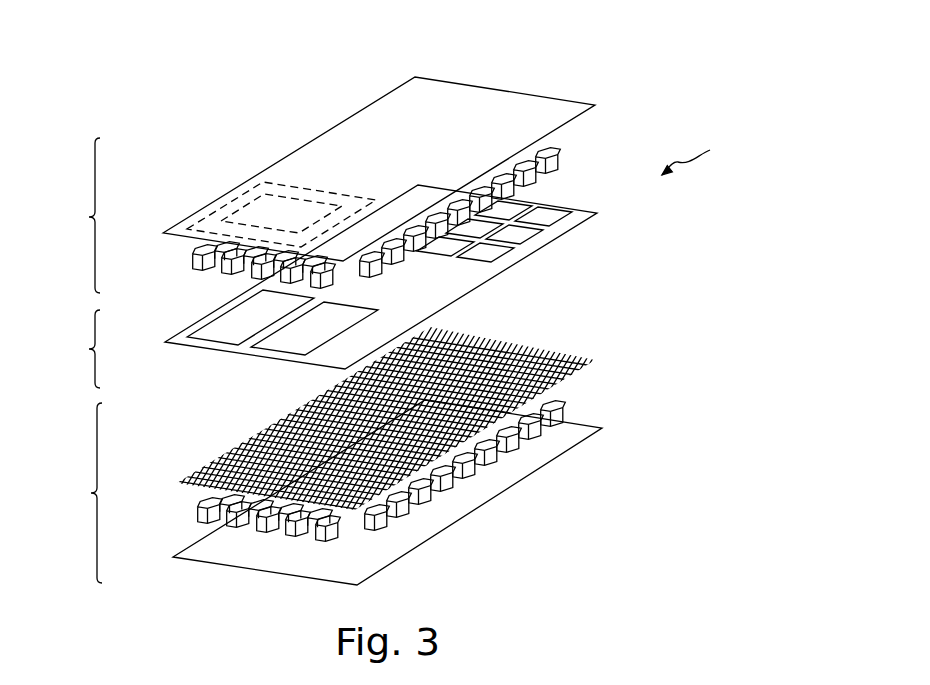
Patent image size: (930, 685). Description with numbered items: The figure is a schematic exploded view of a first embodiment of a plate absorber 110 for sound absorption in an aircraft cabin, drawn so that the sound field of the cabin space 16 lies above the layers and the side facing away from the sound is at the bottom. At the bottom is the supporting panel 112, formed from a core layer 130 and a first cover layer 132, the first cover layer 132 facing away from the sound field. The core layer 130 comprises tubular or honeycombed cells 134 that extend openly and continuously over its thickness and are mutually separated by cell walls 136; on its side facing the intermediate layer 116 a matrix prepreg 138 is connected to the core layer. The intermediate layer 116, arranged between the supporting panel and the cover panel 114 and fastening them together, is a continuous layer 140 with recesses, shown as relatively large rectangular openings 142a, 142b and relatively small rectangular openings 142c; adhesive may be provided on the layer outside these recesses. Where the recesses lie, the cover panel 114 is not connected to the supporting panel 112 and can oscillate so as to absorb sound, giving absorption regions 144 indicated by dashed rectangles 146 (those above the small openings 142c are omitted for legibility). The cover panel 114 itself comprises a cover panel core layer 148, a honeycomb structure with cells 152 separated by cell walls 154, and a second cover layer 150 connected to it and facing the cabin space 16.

The cabin space 16 is at (211, 65).
The plate absorber 110 is at (705, 149).
The supporting panel 112 is at (73, 493).
The cover panel 114 is at (71, 215).
The intermediate layer 116 is at (71, 349).
The core layer 130 is at (548, 408).
The first cover layer 132 is at (478, 507).
The cells 134 is at (210, 497).
The cell walls 136 is at (202, 515).
The matrix prepreg 138 is at (215, 462).
The continuous layer 140 is at (458, 287).
The relatively large rectangular opening 142a is at (218, 332).
The relatively large rectangular opening 142b is at (297, 337).
The relatively small rectangular openings 142c is at (553, 220).
The absorption regions 144 is at (253, 217).
The dashed rectangles 146 is at (343, 195).
The cover panel core layer 148 is at (198, 267).
The second cover layer 150 is at (453, 97).
The cells 152 is at (533, 157).
The cell walls 154 is at (497, 173).